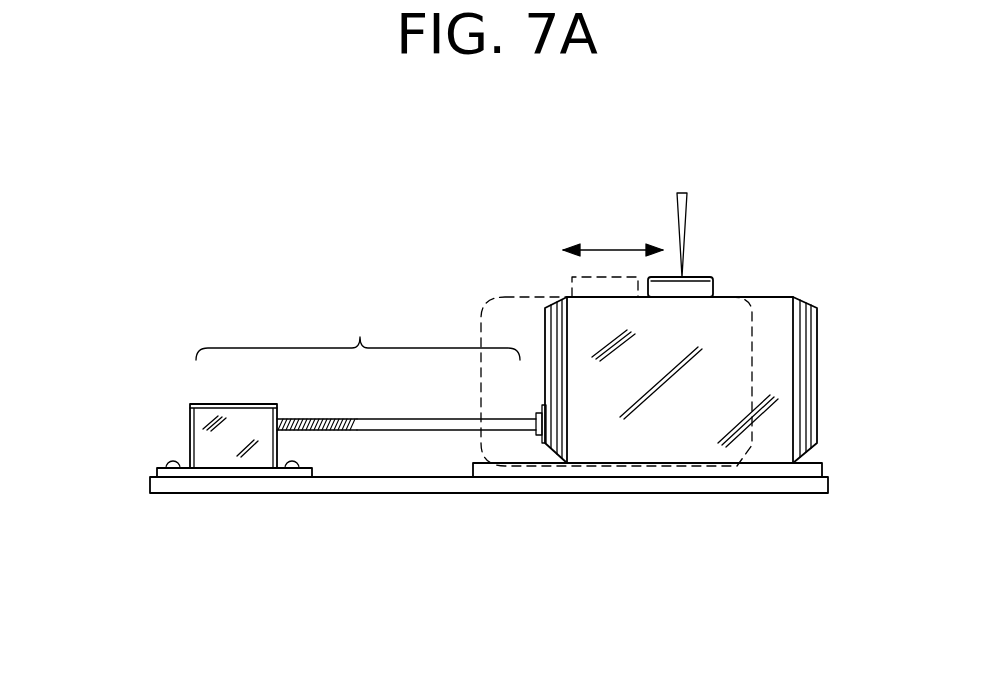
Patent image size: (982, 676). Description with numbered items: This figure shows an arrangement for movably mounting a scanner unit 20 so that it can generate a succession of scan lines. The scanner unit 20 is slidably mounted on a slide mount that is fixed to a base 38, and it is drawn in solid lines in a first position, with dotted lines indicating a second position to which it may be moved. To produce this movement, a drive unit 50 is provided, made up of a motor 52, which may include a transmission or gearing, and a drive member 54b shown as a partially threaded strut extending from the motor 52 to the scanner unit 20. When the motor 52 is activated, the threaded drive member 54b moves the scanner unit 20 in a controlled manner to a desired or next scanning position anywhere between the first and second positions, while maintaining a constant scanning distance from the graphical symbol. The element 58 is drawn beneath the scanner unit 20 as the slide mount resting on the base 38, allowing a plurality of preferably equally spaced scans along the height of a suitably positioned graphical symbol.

The scanner unit 20 is at (755, 272).
The base 38 is at (250, 481).
The drive unit 50 is at (320, 348).
The motor 52 is at (202, 438).
The drive member 54b is at (360, 431).
The slide pad 58 is at (585, 470).